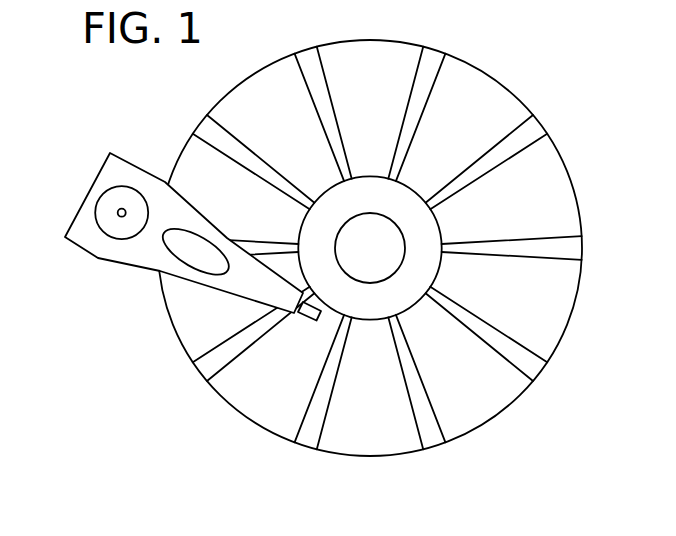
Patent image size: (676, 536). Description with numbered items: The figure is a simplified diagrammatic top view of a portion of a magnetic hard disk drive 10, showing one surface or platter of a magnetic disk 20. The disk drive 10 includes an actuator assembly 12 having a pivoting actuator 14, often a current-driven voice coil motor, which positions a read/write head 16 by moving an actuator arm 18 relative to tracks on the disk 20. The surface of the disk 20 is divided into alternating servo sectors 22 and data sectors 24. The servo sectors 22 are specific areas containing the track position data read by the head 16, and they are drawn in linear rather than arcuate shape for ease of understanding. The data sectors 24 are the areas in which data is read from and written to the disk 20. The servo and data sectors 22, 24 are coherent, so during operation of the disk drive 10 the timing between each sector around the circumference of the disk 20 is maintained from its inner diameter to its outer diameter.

The hard disk drive 10 is at (204, 101).
The actuator assembly 12 is at (128, 154).
The pivoting actuator 14 is at (95, 226).
The read/write head 16 is at (308, 322).
The actuator arm 18 is at (253, 295).
The magnetic disk 20 is at (546, 123).
The servo sectors 22 is at (440, 417).
The data sectors 24 is at (334, 444).